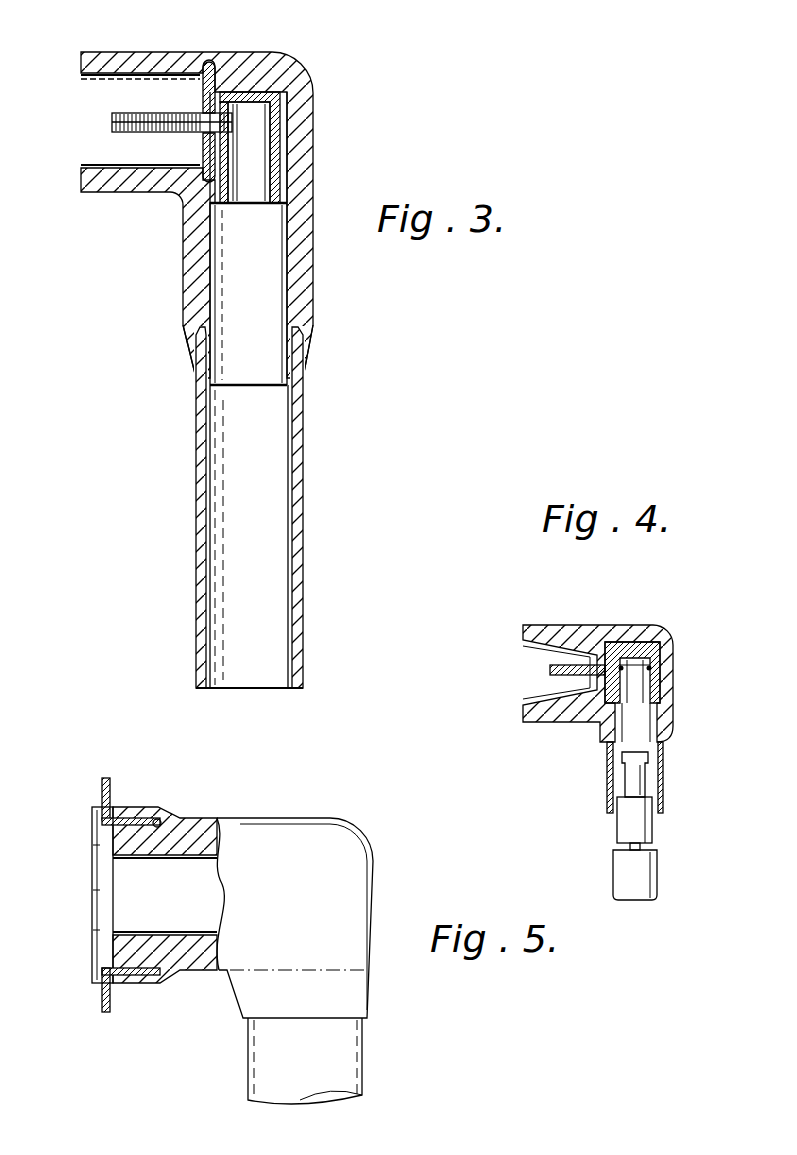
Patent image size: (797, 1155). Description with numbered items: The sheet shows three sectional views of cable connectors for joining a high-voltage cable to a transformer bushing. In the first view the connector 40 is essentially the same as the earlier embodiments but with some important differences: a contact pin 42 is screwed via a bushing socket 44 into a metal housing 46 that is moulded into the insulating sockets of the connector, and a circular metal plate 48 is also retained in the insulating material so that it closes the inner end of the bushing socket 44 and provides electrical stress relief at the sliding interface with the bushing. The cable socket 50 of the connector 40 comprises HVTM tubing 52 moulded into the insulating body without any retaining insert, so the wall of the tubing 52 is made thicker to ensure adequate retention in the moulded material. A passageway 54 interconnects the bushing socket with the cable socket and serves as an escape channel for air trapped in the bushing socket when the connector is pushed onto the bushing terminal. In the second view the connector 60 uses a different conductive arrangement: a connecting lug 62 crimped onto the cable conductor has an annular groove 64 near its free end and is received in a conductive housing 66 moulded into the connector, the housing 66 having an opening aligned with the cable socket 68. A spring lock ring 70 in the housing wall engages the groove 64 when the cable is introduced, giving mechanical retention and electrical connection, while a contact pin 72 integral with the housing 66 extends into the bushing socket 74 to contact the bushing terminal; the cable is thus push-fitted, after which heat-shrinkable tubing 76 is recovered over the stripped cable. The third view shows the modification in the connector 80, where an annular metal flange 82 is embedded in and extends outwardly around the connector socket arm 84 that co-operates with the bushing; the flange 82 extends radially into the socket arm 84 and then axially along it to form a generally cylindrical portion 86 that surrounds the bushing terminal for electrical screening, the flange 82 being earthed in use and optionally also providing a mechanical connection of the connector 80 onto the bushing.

In FIG. 3, the connector 40 is at (152, 262).
In FIG. 3, the contact pin 42 is at (127, 131).
In FIG. 3, the bushing socket 44 is at (147, 63).
In FIG. 3, the metal housing 46 is at (265, 205).
In FIG. 3, the circular metal plate 48 is at (207, 158).
In FIG. 3, the cable socket 50 is at (318, 356).
In FIG. 3, the HVTM tubing 52 is at (303, 488).
In FIG. 3, the passageway 54 is at (313, 95).
In FIG. 4, the connector 60 is at (576, 746).
In FIG. 4, the connecting lug 62 is at (650, 828).
In FIG. 4, the annular groove 64 is at (623, 768).
In FIG. 4, the conductive housing 66 is at (652, 641).
In FIG. 4, the cable socket 68 is at (670, 715).
In FIG. 4, the spring lock ring 70 is at (657, 667).
In FIG. 4, the contact pin 72 is at (550, 670).
In FIG. 4, the bushing socket 74 is at (530, 722).
In FIG. 4, the heat-shrinkable tubing 76 is at (612, 805).
In FIG. 5, the connector 80 is at (394, 843).
In FIG. 5, the annular metal flange 82 is at (110, 1012).
In FIG. 5, the connector socket arm 84 is at (172, 968).
In FIG. 5, the cylindrical portion 86 is at (165, 830).